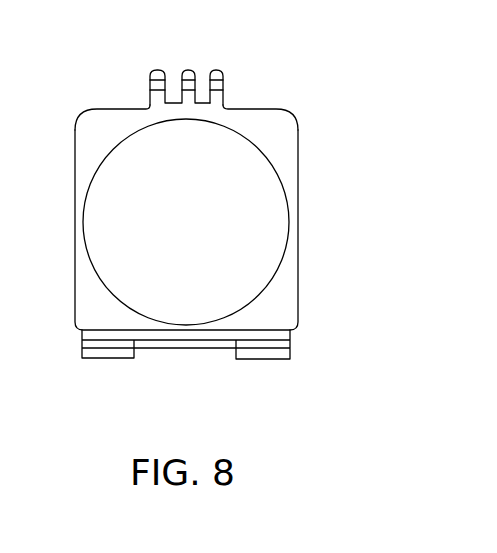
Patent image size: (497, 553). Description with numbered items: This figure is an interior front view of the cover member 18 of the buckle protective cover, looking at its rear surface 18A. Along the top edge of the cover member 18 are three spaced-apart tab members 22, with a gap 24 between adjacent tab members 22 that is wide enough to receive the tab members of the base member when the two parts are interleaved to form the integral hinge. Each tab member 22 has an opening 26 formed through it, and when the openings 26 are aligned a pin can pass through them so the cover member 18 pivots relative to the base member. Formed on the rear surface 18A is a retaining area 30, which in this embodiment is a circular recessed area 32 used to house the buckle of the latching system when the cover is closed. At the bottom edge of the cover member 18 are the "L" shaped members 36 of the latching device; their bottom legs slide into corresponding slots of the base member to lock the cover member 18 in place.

The cover member 18 is at (298, 322).
The rear surface 18A is at (287, 138).
The tab members 22 is at (222, 71).
The gap 24 is at (174, 77).
The opening 26 is at (225, 88).
The retaining area 30 is at (325, 220).
The recessed area 32 is at (205, 238).
The "L" shaped member 36 is at (88, 358).